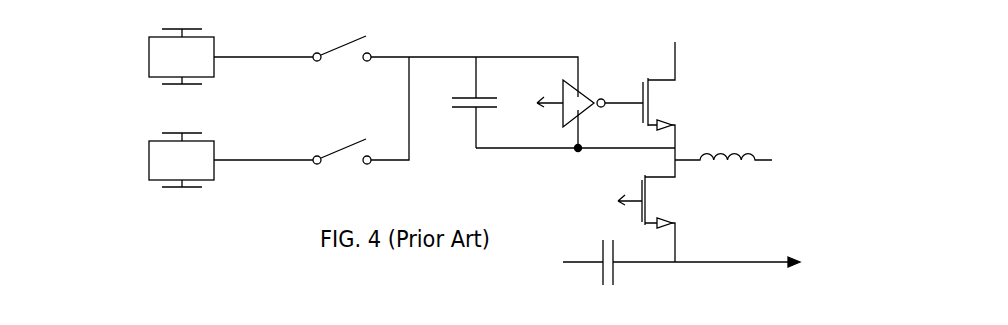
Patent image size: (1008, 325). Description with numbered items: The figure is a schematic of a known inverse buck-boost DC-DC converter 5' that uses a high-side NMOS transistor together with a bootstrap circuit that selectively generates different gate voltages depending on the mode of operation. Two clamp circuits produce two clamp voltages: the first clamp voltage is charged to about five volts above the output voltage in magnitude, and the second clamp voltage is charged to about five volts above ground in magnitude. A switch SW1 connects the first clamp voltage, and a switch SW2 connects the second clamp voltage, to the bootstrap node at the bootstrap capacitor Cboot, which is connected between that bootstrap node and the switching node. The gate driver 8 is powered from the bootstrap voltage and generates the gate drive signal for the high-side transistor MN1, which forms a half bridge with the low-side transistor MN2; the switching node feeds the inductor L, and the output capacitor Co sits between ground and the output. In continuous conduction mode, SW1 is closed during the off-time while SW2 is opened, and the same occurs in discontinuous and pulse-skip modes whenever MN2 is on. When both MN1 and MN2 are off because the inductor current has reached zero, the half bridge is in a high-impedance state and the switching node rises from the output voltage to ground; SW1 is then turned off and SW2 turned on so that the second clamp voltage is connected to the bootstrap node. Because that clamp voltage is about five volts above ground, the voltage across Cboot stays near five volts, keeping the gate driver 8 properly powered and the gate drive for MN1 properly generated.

The inverse buck-boost converter 5' is at (456, 148).
The gate driver 8 is at (581, 110).
The switch SW1 is at (342, 159).
The switch SW2 is at (342, 56).
The bootstrap capacitor Cboot is at (487, 102).
The high-side transistor MN1 is at (644, 101).
The low-side transistor MN2 is at (652, 211).
The inductor L is at (723, 170).
The output capacitor Co is at (601, 261).